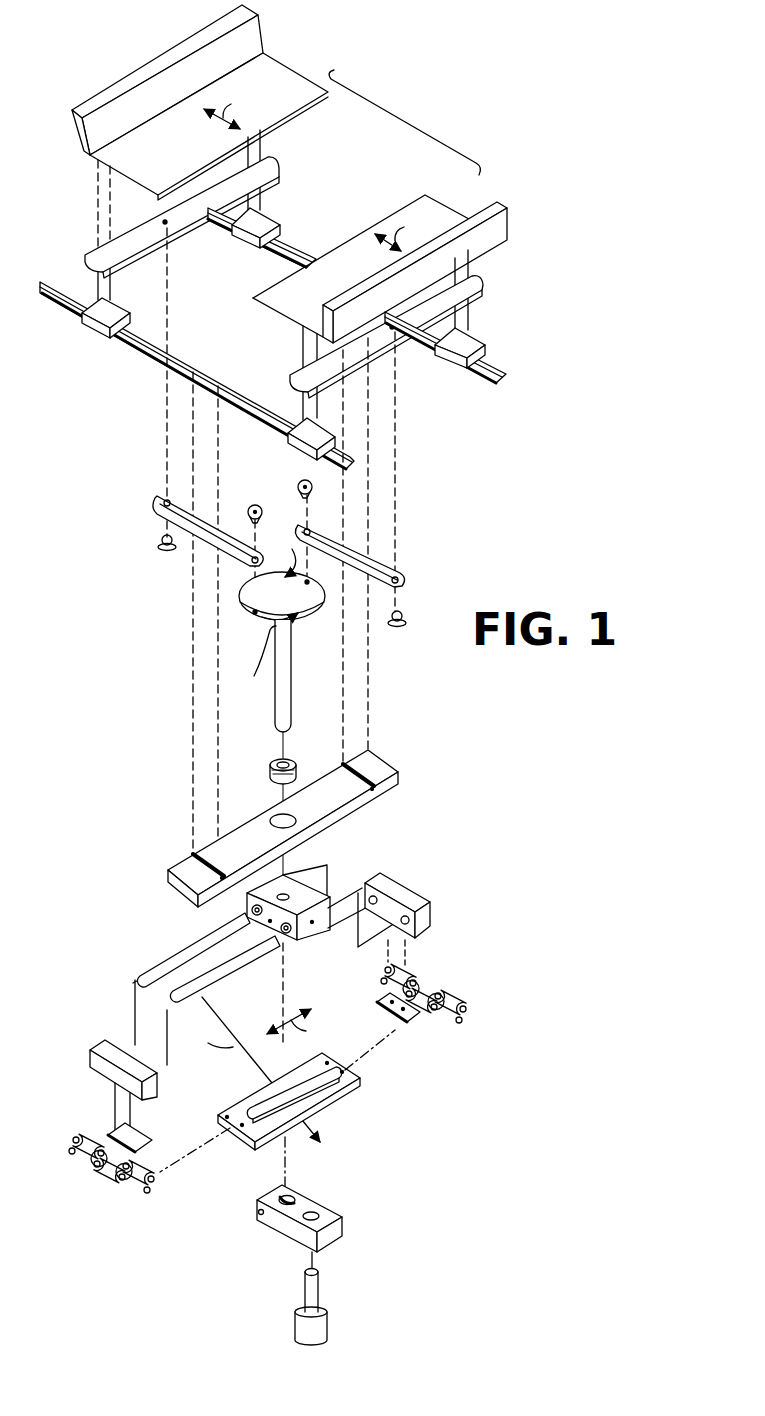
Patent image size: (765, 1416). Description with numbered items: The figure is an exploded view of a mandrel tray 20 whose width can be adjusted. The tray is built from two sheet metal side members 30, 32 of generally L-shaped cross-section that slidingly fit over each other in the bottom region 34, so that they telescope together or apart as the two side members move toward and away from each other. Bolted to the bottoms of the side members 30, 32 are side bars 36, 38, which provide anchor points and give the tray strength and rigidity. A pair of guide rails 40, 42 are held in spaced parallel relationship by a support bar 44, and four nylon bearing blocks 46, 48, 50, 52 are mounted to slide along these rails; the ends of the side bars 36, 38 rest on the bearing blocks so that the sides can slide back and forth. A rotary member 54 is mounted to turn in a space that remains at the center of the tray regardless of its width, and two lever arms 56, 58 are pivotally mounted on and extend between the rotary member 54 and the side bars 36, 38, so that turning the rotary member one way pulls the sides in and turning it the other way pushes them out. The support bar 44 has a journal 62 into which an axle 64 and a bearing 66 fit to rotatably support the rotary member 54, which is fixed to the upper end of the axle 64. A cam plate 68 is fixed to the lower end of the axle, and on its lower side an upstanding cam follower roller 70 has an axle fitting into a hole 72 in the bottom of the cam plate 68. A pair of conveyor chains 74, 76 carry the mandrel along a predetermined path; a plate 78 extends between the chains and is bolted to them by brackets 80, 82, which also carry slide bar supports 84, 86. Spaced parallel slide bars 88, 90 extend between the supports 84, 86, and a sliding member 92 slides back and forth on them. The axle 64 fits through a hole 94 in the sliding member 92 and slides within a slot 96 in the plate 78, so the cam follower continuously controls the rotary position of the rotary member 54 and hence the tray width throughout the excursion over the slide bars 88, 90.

The mandrel tray 20 is at (517, 38).
The side member 30 is at (292, 62).
The side member 32 is at (471, 188).
The bottom region 34 is at (404, 122).
The side bar 36 is at (102, 247).
The side bar 38 is at (402, 340).
The guide rail 40 is at (153, 360).
The guide rail 42 is at (290, 242).
The support bar 44 is at (312, 819).
The nylon bearing block 46 is at (87, 327).
The nylon bearing block 48 is at (303, 450).
The nylon bearing block 50 is at (237, 240).
The nylon bearing block 52 is at (483, 337).
The rotary member 54 is at (262, 618).
The lever arm 56 is at (202, 537).
The lever arm 58 is at (370, 565).
The journal 62 is at (296, 823).
The axle 64 is at (290, 668).
The bearing 66 is at (290, 758).
The cam plate 68 is at (330, 1208).
The cam follower roller 70 is at (324, 1328).
The hole 72 is at (314, 1217).
The conveyor chain 74 is at (98, 1175).
The conveyor chain 76 is at (450, 988).
The plate 78 is at (313, 1101).
The bracket 80 is at (132, 1138).
The bracket 82 is at (418, 1018).
The slide bar support 84 is at (93, 1060).
The slide bar support 86 is at (430, 930).
The slide bar 88 is at (170, 952).
The slide bar 90 is at (235, 965).
The sliding member 92 is at (295, 903).
The hole 94 is at (293, 943).
The slot 96 is at (317, 1080).